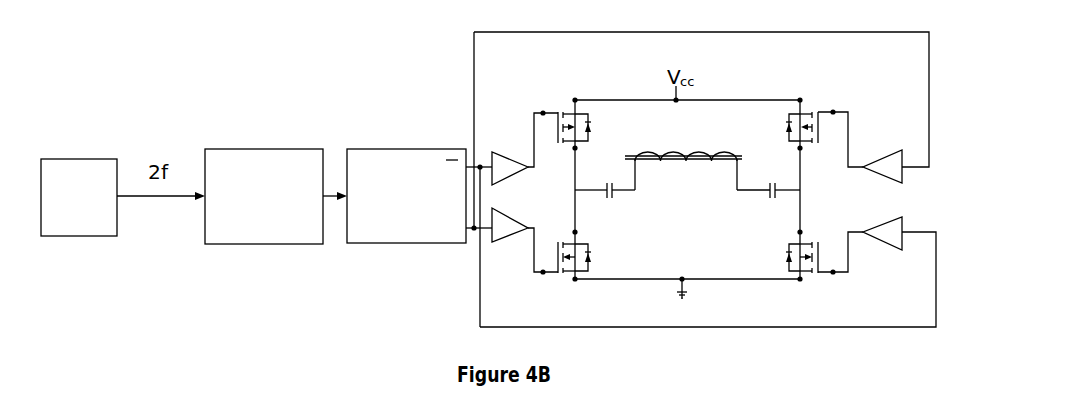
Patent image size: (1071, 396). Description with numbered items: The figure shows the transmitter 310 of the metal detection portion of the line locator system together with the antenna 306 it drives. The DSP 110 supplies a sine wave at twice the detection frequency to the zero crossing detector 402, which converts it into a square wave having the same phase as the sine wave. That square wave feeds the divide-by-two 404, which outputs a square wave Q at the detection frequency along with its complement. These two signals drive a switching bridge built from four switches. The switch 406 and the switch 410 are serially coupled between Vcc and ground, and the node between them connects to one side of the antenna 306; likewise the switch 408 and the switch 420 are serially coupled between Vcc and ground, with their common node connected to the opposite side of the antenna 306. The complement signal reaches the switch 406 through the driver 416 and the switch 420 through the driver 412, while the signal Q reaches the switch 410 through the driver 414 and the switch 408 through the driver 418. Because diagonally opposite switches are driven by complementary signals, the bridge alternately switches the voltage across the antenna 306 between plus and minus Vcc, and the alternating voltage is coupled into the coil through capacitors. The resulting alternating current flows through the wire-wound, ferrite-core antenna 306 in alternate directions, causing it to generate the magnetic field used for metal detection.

The DSP 110 is at (78, 158).
The zero crossing detector 402 is at (245, 148).
The divide-by-2 404 is at (403, 152).
The transmitter 310 is at (311, 97).
The switch 406 is at (555, 94).
The driver 416 is at (515, 158).
The driver 414 is at (503, 236).
The switch 410 is at (562, 278).
The switch 408 is at (812, 100).
The driver 418 is at (882, 157).
The switch 420 is at (817, 240).
The driver 412 is at (888, 243).
The antenna 306 is at (695, 182).